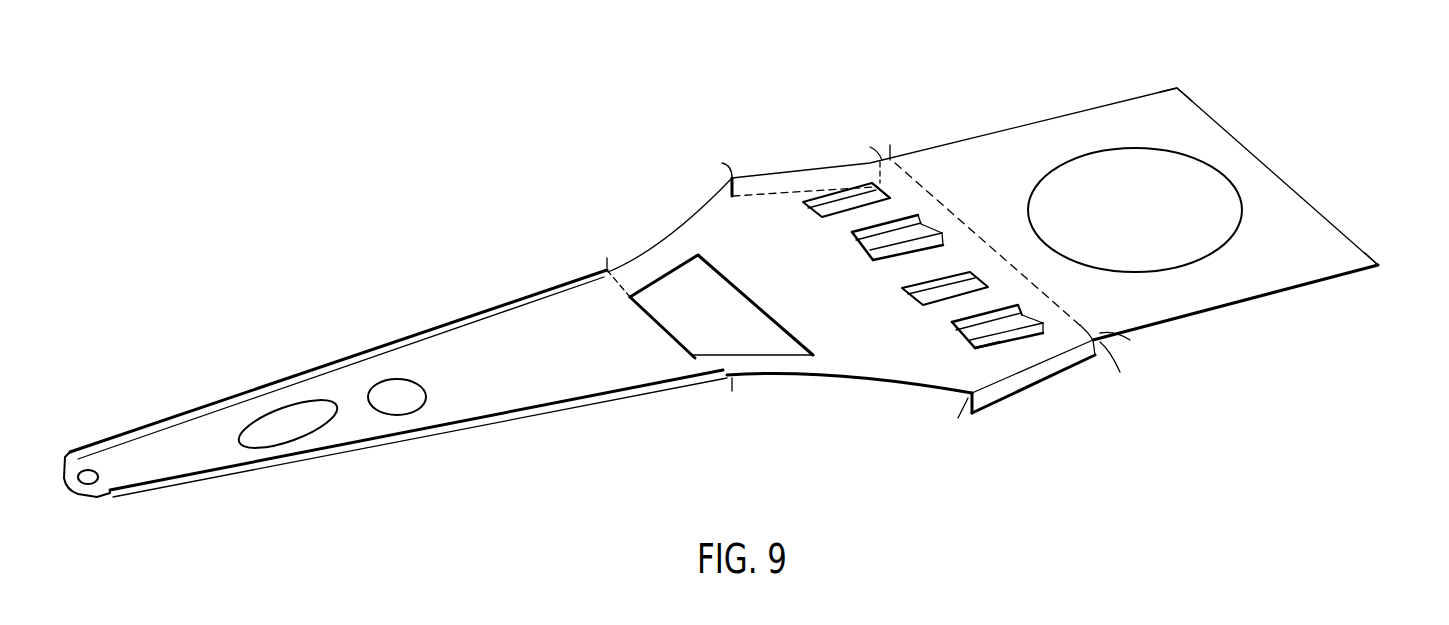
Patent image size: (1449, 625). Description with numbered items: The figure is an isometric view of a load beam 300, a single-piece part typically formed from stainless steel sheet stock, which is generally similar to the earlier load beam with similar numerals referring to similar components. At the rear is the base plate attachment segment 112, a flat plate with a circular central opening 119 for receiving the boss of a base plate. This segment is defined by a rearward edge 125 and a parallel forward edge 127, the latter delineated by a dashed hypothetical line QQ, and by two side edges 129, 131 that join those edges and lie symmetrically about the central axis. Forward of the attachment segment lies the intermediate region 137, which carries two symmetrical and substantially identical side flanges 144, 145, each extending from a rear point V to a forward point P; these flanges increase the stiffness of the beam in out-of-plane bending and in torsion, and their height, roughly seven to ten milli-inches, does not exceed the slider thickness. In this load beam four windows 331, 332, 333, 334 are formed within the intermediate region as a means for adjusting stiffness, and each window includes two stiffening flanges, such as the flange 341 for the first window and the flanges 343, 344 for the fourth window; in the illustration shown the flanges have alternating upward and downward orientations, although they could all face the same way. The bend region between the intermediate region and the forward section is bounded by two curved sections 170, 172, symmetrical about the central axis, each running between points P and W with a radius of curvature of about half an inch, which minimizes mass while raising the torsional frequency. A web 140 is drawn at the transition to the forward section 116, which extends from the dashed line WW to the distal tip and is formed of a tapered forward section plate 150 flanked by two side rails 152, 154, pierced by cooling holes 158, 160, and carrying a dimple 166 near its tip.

The load beam 300 is at (746, 118).
The base plate attachment segment 112 is at (1295, 268).
The forward section 116 is at (462, 446).
The circular central opening 119 is at (1078, 157).
The rearward edge 125 is at (1355, 238).
The forward edge 127 is at (915, 178).
The side edge 129 is at (1140, 90).
The side edge 131 is at (1232, 303).
The intermediate region 137 is at (715, 225).
The web 140 is at (778, 353).
The side flange 144 is at (1043, 373).
The side flange 145 is at (790, 177).
The tapered forward section plate 150 is at (338, 385).
The side rail 152 is at (560, 400).
The side rail 154 is at (535, 300).
The cooling hole 158 is at (400, 415).
The cooling hole 160 is at (312, 438).
The dimple 166 is at (80, 456).
The curved section 170 is at (857, 385).
The curved section 172 is at (667, 238).
The window 331 is at (820, 207).
The window 332 is at (857, 253).
The window 333 is at (903, 293).
The window 334 is at (950, 343).
The stiffening flange 341 is at (874, 185).
The stiffening flange 343 is at (1027, 312).
The stiffening flange 344 is at (997, 340).